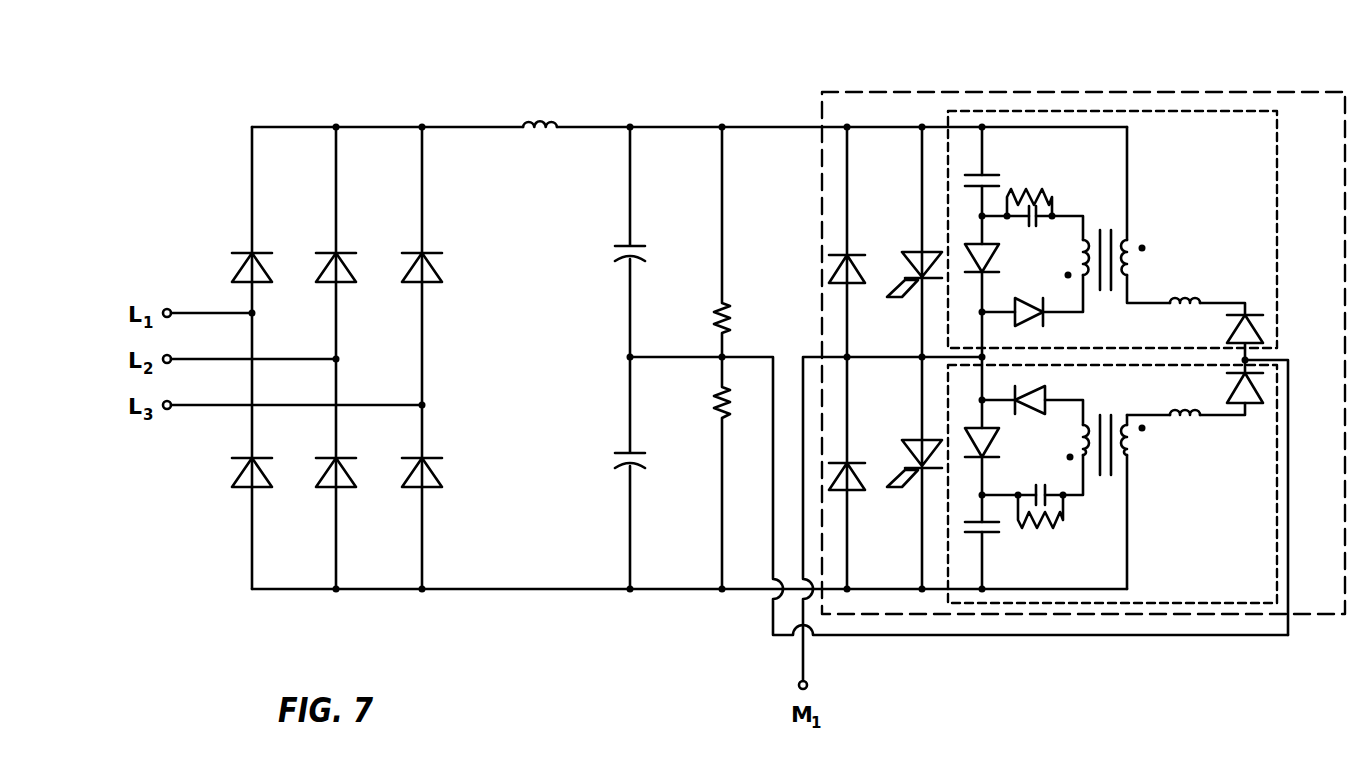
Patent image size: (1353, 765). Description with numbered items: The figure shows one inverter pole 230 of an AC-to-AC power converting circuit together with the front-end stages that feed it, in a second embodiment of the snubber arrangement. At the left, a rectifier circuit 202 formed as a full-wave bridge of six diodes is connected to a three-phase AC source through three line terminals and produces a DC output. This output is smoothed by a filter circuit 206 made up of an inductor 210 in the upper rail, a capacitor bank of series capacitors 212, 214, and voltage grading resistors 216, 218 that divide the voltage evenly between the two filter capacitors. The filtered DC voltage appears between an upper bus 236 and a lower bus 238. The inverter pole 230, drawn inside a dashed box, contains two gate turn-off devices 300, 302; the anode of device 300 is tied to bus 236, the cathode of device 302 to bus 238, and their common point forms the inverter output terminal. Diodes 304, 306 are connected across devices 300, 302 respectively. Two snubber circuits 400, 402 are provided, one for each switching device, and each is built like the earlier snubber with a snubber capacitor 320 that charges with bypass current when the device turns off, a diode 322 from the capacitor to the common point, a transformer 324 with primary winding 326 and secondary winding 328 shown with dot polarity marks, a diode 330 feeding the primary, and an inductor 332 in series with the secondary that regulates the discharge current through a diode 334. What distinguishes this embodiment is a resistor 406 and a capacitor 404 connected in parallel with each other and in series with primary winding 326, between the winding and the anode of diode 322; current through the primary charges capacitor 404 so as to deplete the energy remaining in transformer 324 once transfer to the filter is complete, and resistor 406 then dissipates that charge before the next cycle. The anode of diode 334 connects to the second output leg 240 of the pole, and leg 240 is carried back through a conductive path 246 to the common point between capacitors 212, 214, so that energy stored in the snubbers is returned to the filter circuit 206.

The rectifier circuit 202 is at (445, 103).
The filter circuit 206 is at (732, 103).
The inductor 210 is at (538, 132).
The capacitor 212 is at (614, 246).
The capacitor 214 is at (614, 453).
The voltage grading resistor 216 is at (718, 322).
The voltage grading resistor 218 is at (718, 402).
The inverter pole 230 is at (975, 90).
The bus 236 is at (762, 126).
The bus 238 is at (747, 591).
The second output leg 240 is at (1318, 355).
The conductive path 246 is at (773, 625).
The gate turn-off device 300 is at (918, 250).
The gate turn-off device 302 is at (918, 440).
The diode 304 is at (851, 286).
The diode 306 is at (850, 493).
The snubber capacitor 320 is at (990, 178).
The diode 322 is at (1003, 250).
The transformer 324 is at (1099, 212).
The primary winding 326 is at (1076, 266).
The secondary winding 328 is at (1135, 258).
The diode 330 is at (1045, 318).
The inductor 332 is at (1182, 298).
The diode 334 is at (1228, 336).
The snubber circuit 400 is at (1144, 237).
The snubber circuit 402 is at (1322, 522).
The capacitor 404 is at (1027, 226).
The resistor 406 is at (1050, 195).